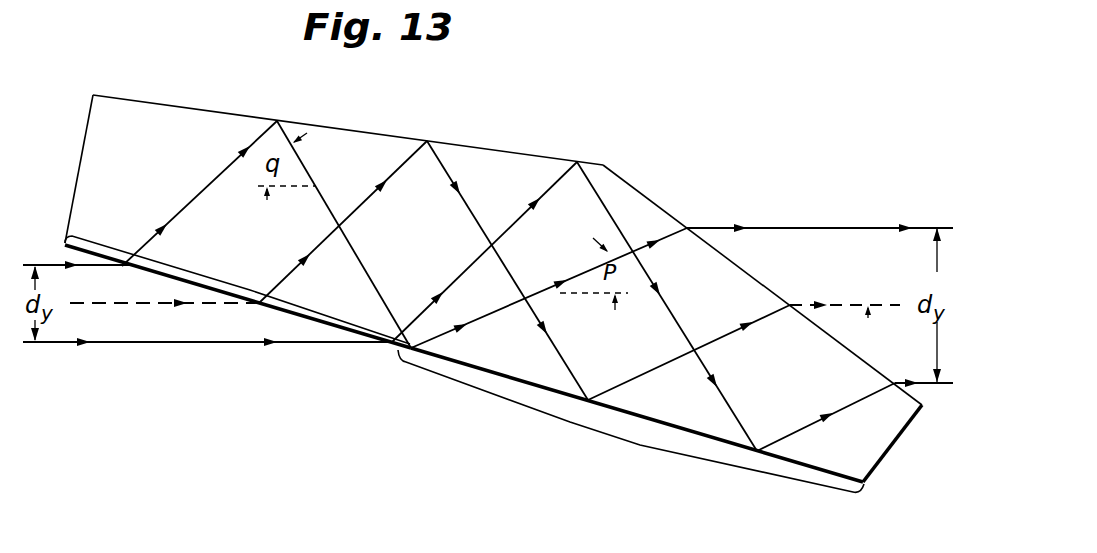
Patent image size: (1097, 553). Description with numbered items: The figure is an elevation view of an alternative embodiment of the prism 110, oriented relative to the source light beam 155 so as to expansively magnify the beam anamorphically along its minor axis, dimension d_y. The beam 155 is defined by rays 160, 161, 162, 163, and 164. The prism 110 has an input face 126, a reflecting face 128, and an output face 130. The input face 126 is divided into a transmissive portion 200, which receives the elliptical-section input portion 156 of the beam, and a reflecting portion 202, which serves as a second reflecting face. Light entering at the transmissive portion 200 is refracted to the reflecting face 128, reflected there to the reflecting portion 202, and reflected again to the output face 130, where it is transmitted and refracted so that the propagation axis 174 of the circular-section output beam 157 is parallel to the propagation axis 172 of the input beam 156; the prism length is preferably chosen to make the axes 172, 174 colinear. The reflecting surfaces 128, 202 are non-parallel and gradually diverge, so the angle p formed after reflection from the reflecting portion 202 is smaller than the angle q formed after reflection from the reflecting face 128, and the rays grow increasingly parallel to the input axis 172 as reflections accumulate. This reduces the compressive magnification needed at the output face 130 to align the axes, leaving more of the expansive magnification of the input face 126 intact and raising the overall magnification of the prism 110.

The prism 110 is at (583, 144).
The reflecting face 128 is at (374, 134).
The output face 130 is at (760, 268).
The input face 126 is at (500, 348).
The source light beam 155 is at (69, 350).
The input portion of the beam 156 is at (171, 349).
The output beam 157 is at (813, 221).
The ray 160 is at (213, 182).
The ray 161 is at (235, 345).
The ray 162 is at (199, 193).
The ray 163 is at (331, 222).
The ray 164 is at (297, 266).
The input propagation axis 172 is at (120, 305).
The output propagation axis 174 is at (868, 320).
The transmissive portion 200 is at (243, 278).
The reflecting portion 202 is at (636, 442).